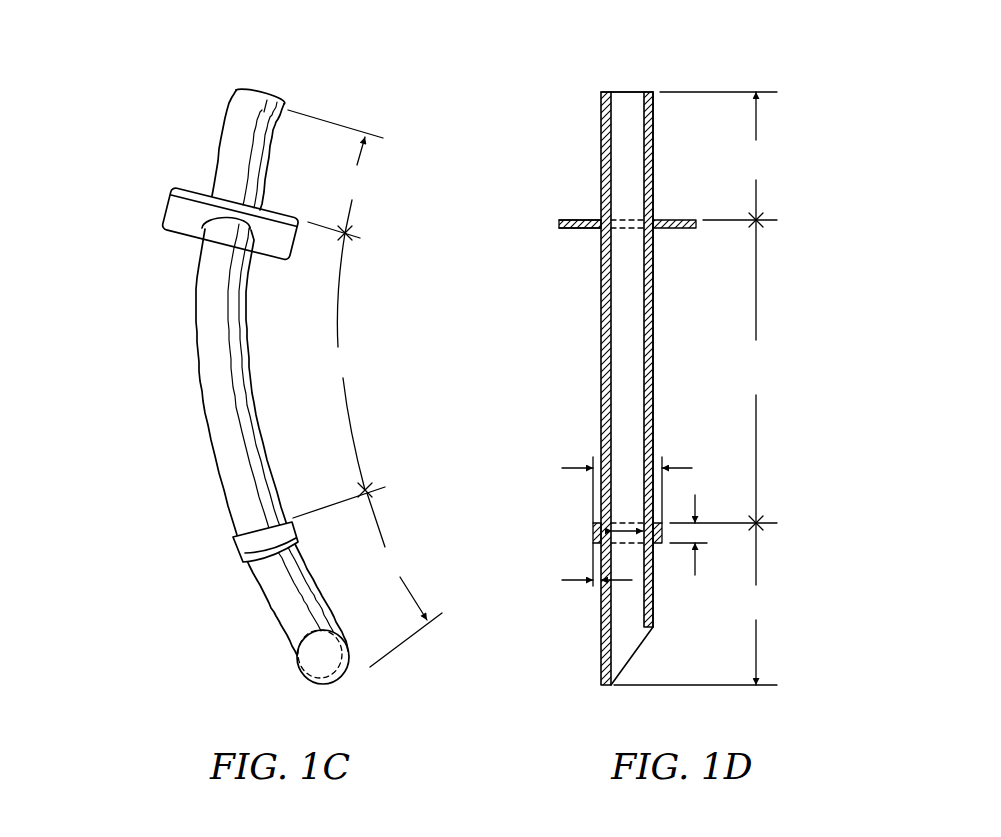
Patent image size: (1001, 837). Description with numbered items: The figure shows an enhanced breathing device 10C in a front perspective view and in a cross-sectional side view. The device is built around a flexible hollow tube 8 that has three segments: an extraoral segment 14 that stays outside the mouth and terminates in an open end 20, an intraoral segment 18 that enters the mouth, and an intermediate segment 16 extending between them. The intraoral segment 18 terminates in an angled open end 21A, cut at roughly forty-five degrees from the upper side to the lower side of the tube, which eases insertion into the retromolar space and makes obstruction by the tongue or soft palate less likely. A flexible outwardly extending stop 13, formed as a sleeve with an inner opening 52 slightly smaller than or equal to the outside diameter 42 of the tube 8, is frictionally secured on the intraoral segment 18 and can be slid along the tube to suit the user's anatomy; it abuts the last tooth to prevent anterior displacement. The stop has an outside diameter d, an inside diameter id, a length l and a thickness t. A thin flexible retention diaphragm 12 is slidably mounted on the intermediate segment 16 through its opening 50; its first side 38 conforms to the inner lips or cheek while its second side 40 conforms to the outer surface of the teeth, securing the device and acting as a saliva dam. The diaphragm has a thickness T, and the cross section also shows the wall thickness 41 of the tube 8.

In FIG. 1C, the flexible hollow tube 8 is at (197, 336).
In FIG. 1D, the flexible hollow tube 8 is at (600, 368).
In FIG. 1C, the enhanced breathing device 10C is at (390, 80).
In FIG. 1D, the enhanced breathing device 10C is at (818, 78).
In FIG. 1C, the retention diaphragm 12 is at (162, 208).
In FIG. 1D, the retention diaphragm 12 is at (559, 224).
In FIG. 1C, the stop 13 is at (237, 548).
In FIG. 1D, the stop 13 is at (595, 531).
In FIG. 1C, the extraoral segment 14 is at (335, 175).
In FIG. 1D, the extraoral segment 14 is at (718, 159).
In FIG. 1C, the intermediate segment 16 is at (339, 375).
In FIG. 1D, the intermediate segment 16 is at (723, 375).
In FIG. 1C, the intraoral segment 18 is at (404, 580).
In FIG. 1D, the intraoral segment 18 is at (695, 604).
In FIG. 1C, the open end 20 is at (266, 94).
In FIG. 1D, the open end 20 is at (632, 91).
In FIG. 1C, the angled open end 21A is at (350, 686).
In FIG. 1D, the angled open end 21A is at (628, 660).
In FIG. 1D, the first side 38 is at (572, 219).
In FIG. 1D, the second side 40 is at (560, 230).
In FIG. 1D, the thickness of the tube 41 is at (604, 91).
In FIG. 1C, the outside diameter of the tube 42 is at (207, 432).
In FIG. 1D, the outside diameter of the tube 42 is at (655, 140).
In FIG. 1D, the opening 50 is at (622, 219).
In FIG. 1D, the inner opening 52 is at (624, 523).
In FIG. 1C, the thickness of the retention diaphragm T is at (180, 222).
In FIG. 1D, the outside diameter of the stop d is at (614, 487).
In FIG. 1D, the length of the stop l is at (690, 526).
In FIG. 1D, the thickness of the stop t is at (586, 568).
In FIG. 1D, the inside diameter of the stop id is at (628, 540).